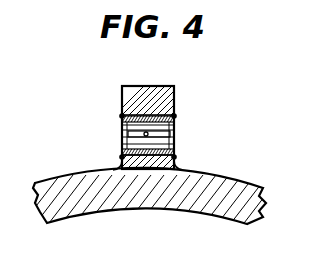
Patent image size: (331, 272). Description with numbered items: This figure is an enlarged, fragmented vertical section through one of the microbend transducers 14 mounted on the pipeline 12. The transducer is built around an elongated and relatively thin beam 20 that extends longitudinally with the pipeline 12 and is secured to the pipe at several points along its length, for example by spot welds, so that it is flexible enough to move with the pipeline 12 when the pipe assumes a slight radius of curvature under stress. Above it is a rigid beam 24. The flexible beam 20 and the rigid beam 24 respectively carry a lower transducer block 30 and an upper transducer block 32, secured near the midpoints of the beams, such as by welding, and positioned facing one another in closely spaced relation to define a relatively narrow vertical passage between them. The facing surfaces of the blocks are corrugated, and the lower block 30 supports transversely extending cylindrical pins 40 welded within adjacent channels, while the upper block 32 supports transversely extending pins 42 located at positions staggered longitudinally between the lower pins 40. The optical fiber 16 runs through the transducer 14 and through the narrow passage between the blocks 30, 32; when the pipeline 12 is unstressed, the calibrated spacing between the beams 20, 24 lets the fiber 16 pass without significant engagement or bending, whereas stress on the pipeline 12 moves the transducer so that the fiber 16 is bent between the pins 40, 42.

The pipeline 12 is at (240, 190).
The microbend transducer 14 is at (188, 92).
The optical fiber 16 is at (128, 132).
The flexible beam 20 is at (163, 163).
The rigid beam 24 is at (122, 97).
The lower transducer block 30 is at (122, 153).
The upper transducer block 32 is at (160, 114).
The cylindrical pins 40 is at (174, 142).
The pins 42 is at (150, 133).